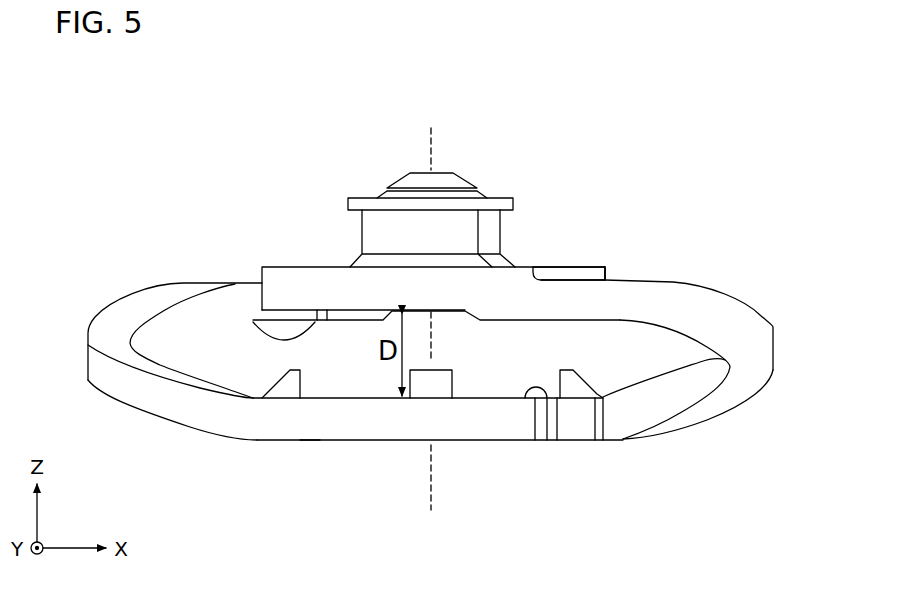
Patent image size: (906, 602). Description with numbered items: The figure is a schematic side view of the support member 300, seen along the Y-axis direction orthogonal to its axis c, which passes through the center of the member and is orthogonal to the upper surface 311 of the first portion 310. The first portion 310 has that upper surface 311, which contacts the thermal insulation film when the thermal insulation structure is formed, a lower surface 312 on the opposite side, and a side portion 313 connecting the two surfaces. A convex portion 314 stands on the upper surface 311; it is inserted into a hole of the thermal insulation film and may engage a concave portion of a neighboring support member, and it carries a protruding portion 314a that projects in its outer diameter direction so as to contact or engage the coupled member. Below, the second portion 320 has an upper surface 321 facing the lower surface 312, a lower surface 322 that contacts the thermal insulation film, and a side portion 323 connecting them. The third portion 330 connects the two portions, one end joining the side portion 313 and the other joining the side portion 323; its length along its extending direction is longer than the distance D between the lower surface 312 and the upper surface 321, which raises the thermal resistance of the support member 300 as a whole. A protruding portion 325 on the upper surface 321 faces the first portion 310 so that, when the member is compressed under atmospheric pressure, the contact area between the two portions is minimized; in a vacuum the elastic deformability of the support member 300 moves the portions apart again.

The support member 300 is at (708, 204).
The first portion 310 is at (277, 267).
The upper surface 311 is at (565, 267).
The lower surface 312 is at (253, 322).
The side portion 313 is at (605, 275).
The convex portion 314 is at (362, 240).
The protruding portion 314a is at (513, 203).
The second portion 320 is at (365, 425).
The upper surface 321 is at (546, 440).
The lower surface 322 is at (305, 440).
The side portion 323 is at (450, 424).
The protruding portion 325 is at (288, 390).
The third portion 330 is at (118, 320).